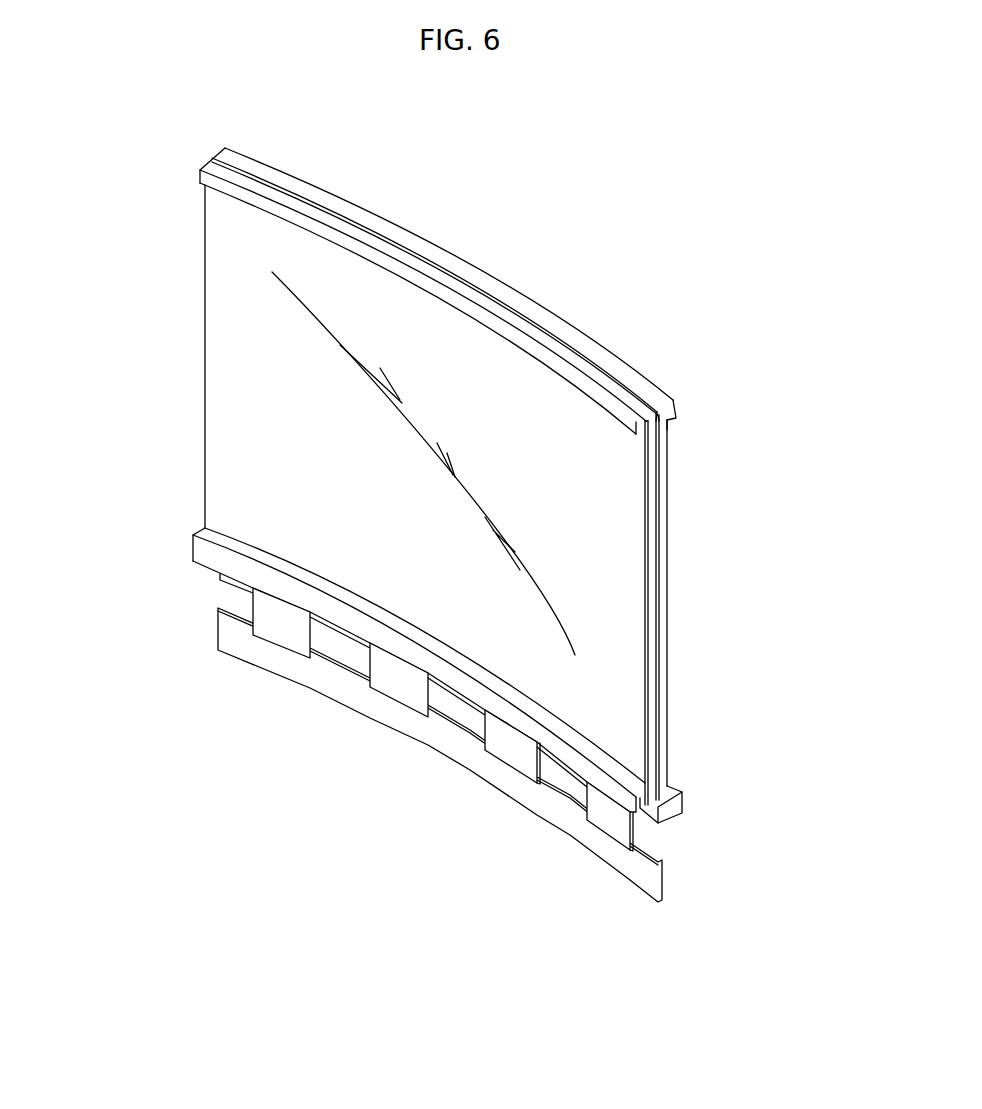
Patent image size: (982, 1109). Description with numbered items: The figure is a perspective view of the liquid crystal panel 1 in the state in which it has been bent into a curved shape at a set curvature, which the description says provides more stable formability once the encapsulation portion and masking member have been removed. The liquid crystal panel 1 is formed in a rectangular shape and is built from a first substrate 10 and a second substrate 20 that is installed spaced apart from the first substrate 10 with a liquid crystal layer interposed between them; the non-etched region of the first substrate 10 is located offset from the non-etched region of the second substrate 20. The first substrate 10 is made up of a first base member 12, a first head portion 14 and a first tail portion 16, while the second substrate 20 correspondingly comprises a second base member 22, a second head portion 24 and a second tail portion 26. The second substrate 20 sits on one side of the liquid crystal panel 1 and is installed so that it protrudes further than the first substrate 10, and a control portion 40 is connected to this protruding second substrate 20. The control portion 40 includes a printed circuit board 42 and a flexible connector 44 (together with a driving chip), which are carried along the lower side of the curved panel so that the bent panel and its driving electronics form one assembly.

The liquid crystal panel 1 is at (778, 475).
The first substrate 10 is at (163, 418).
The first base member 12 is at (213, 327).
The first head portion 14 is at (207, 557).
The first tail portion 16 is at (213, 187).
The second substrate 20 is at (692, 652).
The second base member 22 is at (668, 553).
The second head portion 24 is at (682, 792).
The second tail portion 26 is at (678, 407).
The control portion 40 is at (470, 815).
The printed circuit board 42 is at (445, 735).
The flexible connector 44 is at (400, 678).